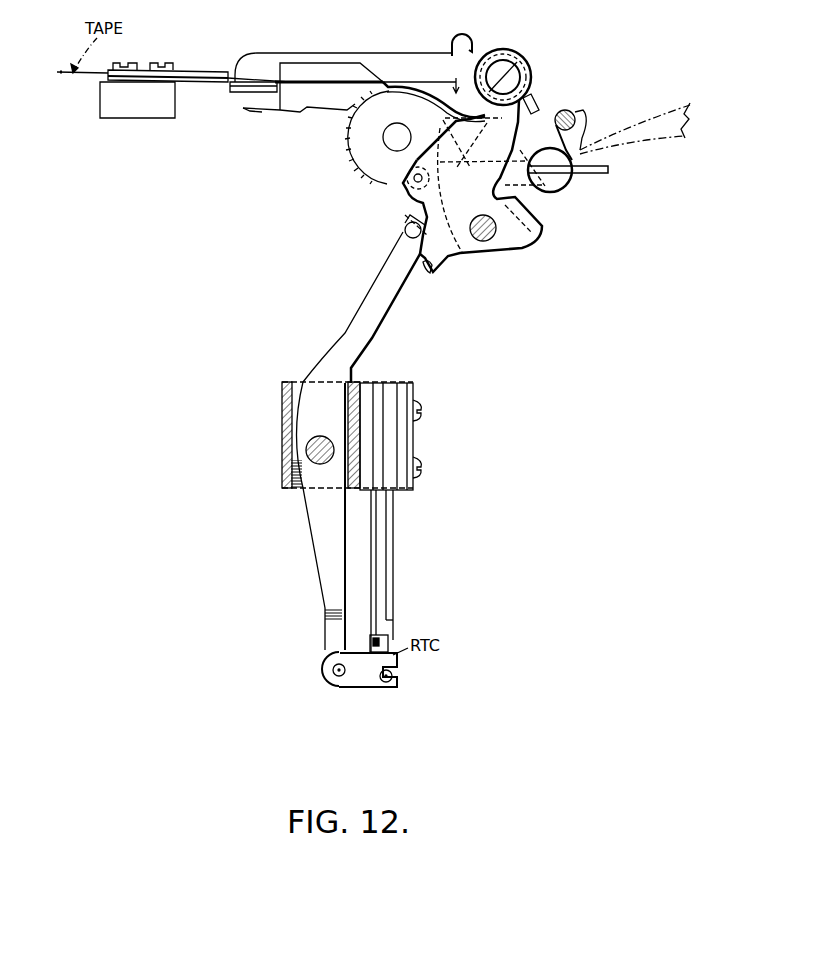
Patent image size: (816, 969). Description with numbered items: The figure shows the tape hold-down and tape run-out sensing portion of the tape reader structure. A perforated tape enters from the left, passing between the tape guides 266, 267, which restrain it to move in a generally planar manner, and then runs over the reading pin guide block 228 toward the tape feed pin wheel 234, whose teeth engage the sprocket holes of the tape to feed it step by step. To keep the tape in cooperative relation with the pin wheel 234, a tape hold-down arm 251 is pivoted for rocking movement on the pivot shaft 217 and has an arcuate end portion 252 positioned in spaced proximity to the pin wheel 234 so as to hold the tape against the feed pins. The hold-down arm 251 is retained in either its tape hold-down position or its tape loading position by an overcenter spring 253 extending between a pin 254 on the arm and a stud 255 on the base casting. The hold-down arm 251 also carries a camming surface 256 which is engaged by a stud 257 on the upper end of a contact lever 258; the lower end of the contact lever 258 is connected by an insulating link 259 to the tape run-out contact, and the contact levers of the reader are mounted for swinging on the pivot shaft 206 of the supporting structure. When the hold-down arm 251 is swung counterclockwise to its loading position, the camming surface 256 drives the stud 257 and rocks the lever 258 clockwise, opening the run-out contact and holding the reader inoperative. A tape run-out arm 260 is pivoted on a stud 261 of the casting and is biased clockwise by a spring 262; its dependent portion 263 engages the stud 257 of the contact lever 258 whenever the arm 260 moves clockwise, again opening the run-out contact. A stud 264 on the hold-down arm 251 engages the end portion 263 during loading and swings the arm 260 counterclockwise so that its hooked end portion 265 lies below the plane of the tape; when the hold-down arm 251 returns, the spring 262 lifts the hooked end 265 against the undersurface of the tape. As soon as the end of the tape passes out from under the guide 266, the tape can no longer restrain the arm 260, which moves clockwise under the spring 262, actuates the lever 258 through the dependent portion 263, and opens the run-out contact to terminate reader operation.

The pivot shaft 206 is at (316, 458).
The pivot shaft 217 is at (485, 241).
The reading pin guide block 228 is at (287, 113).
The tape feed pin wheel 234 is at (348, 156).
The tape hold-down arm 251 is at (533, 110).
The arcuate end portion 252 is at (449, 53).
The overcenter spring 253 is at (582, 139).
The pin 254 is at (540, 198).
The stud 255 is at (577, 118).
The camming surface 256 is at (428, 274).
The stud 257 is at (404, 230).
The contact lever 258 is at (378, 291).
The insulating link 259 is at (368, 688).
The tape run-out arm 260 is at (378, 52).
The stud 261 is at (504, 62).
The spring 262 is at (471, 64).
The dependent portion 263 is at (445, 258).
The stud 264 is at (405, 190).
The hooked end portion 265 is at (243, 92).
The tape guide 266 is at (200, 71).
The tape guide 267 is at (293, 66).